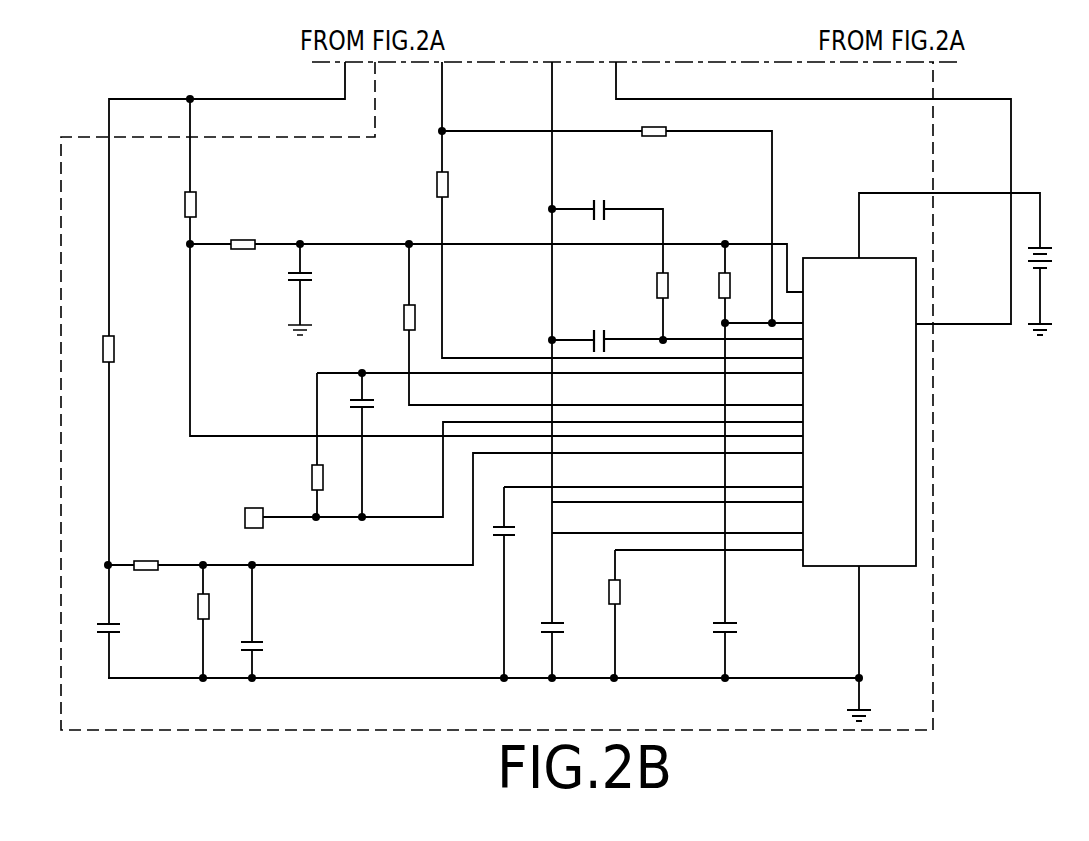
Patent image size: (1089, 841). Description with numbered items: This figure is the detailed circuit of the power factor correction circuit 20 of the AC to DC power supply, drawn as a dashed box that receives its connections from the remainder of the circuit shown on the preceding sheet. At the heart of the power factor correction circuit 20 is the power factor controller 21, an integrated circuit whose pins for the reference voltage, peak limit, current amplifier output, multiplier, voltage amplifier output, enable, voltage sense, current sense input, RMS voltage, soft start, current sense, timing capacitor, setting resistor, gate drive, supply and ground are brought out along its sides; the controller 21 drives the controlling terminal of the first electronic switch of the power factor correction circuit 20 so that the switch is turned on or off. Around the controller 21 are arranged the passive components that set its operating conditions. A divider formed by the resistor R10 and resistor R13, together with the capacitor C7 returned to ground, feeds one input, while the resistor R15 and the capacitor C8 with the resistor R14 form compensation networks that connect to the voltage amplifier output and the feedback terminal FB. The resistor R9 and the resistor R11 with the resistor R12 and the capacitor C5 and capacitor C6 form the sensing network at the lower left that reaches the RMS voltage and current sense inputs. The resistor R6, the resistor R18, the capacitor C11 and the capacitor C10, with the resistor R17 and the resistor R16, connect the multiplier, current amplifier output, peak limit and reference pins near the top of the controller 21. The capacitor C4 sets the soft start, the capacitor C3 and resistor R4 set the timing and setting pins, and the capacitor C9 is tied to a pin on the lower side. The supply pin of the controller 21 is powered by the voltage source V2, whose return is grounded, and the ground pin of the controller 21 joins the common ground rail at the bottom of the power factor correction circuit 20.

The power factor correction circuit 20 is at (933, 430).
The power factor controller 21 is at (843, 262).
The resistor R10 910K R10 is at (214, 201).
The resistor R13 220K R13 is at (253, 245).
The capacitor C7 1u C7 is at (306, 304).
The resistor R15 22K R15 is at (390, 316).
The resistor R9 910K R9 is at (134, 348).
The capacitor C8 47n C8 is at (379, 415).
The resistor R14 180K R14 is at (292, 474).
The feedback input FB is at (241, 518).
The resistor R11 91K R11 is at (152, 566).
The resistor R12 20K R12 is at (222, 605).
The capacitor C5 100n C5 is at (124, 652).
The capacitor C6 470n C6 is at (271, 656).
The resistor R6 4K R6 is at (456, 184).
The resistor R18 1.5K R18 is at (660, 132).
The capacitor C11 620p C11 is at (587, 208).
The capacitor C10 is at (604, 327).
The resistor R17 24K R17 is at (682, 278).
The resistor R16 10K R16 is at (744, 278).
The capacitor C4 1U C4 is at (514, 555).
The capacitor C3 820p C3 is at (569, 650).
The resistor R4 15K R4 is at (633, 584).
The capacitor C9 470p C9 is at (748, 651).
The voltage source V2 20V V2 is at (1052, 267).